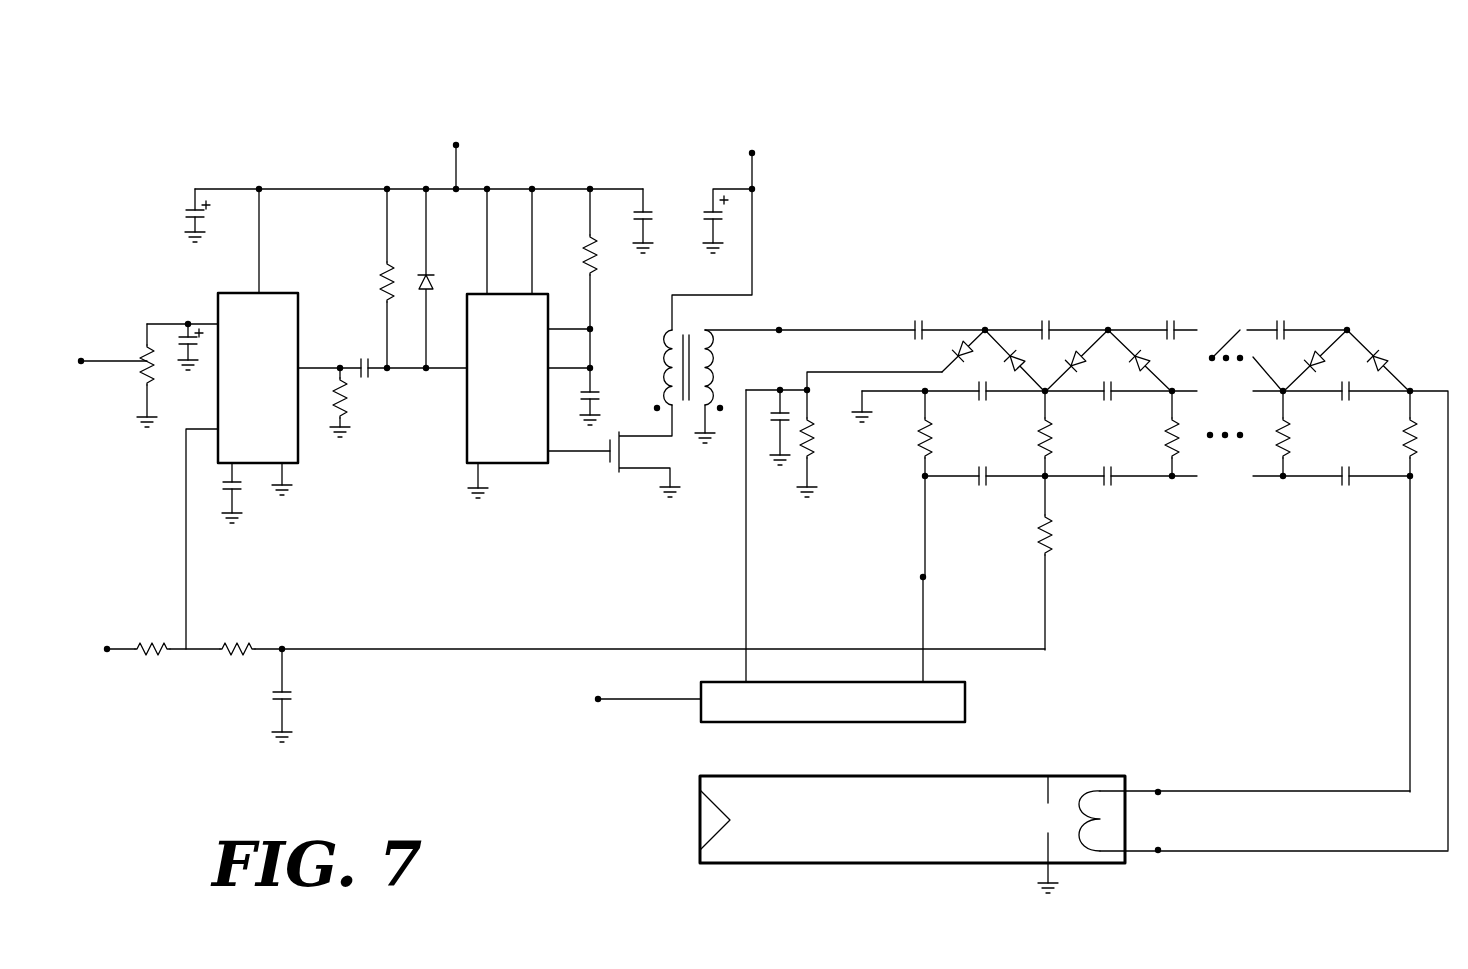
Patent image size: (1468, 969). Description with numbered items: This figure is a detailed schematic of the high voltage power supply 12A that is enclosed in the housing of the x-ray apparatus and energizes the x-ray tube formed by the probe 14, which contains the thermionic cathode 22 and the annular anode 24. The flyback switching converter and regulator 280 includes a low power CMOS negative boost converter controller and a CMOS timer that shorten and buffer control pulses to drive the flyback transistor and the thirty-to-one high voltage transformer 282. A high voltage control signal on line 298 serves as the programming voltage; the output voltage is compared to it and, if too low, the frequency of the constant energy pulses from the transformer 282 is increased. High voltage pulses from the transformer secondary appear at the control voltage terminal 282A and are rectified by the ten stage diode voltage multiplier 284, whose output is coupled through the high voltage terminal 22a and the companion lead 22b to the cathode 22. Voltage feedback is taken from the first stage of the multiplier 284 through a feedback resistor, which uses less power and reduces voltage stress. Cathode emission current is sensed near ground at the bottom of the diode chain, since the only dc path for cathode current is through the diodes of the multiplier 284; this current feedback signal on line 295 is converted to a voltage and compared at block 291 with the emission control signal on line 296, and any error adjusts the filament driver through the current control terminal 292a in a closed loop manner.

The high voltage power supply 12A is at (808, 70).
The flyback switching converter and regulator 280 is at (549, 139).
The high voltage transformer 282 is at (784, 266).
The control voltage terminal 282A is at (779, 330).
The voltage multiplier 284 is at (1165, 244).
The block 291 is at (942, 697).
The current control terminal 292a is at (923, 577).
The current feedback signal line 295 is at (746, 580).
The emission control signal line 296 is at (657, 700).
The high voltage control signal line 298 is at (118, 652).
The probe 14 is at (870, 864).
The cathode 22 is at (1100, 860).
The high voltage terminal 22a is at (1158, 850).
The filament lead 22b is at (1158, 792).
The anode 24 is at (1045, 835).